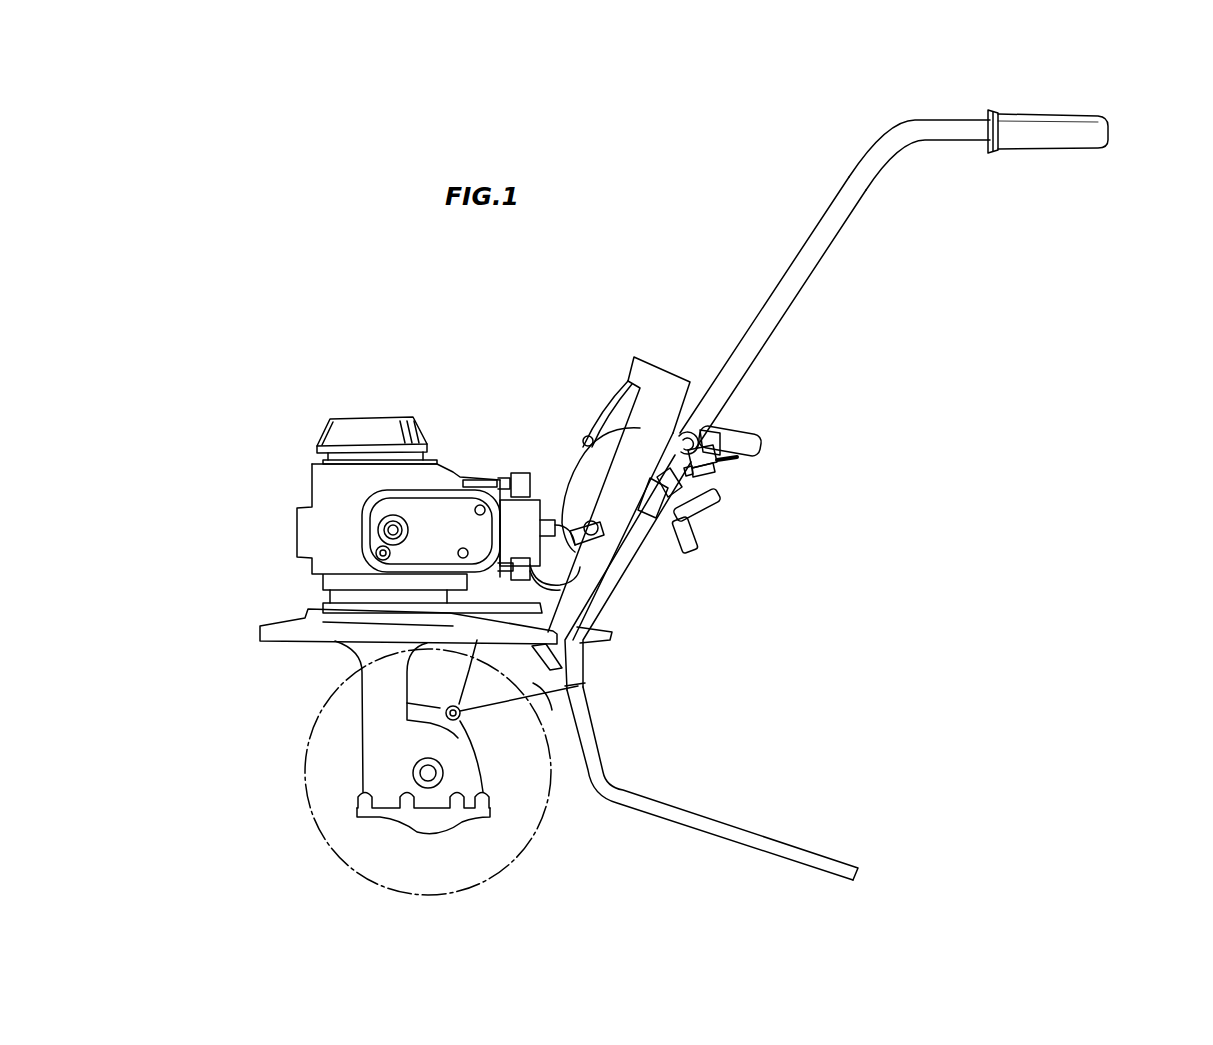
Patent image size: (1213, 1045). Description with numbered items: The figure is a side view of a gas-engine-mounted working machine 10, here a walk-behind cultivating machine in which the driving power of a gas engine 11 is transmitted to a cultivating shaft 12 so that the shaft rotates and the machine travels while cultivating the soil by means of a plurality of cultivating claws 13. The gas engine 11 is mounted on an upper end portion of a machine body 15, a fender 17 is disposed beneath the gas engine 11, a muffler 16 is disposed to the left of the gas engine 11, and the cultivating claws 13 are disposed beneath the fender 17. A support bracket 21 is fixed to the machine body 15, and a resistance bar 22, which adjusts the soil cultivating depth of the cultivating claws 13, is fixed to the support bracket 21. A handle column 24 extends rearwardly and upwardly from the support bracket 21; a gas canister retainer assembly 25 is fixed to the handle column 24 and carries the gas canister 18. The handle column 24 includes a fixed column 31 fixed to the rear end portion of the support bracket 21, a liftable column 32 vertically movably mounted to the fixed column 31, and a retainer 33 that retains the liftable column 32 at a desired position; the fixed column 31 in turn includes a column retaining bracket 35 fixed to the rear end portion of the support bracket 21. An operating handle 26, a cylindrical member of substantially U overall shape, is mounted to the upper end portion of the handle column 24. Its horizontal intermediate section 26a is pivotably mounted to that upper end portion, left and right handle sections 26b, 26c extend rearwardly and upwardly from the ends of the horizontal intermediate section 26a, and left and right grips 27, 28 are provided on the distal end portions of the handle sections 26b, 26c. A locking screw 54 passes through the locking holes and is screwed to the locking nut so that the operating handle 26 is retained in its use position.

The gas-engine-mounted working machine 10 is at (300, 348).
The gas engine 11 is at (391, 485).
The cultivating shaft 12 is at (418, 773).
The cultivating claws 13 is at (377, 717).
The machine body 15 is at (362, 645).
The muffler 16 is at (405, 500).
The fender 17 is at (267, 634).
The gas canister 18 is at (652, 372).
The support bracket 21 is at (537, 686).
The resistance bar 22 is at (762, 843).
The handle column 24 is at (701, 572).
The gas canister retainer assembly 25 is at (575, 462).
The operating handle 26 is at (835, 277).
The horizontal intermediate section 26a is at (700, 440).
The left handle section 26b is at (831, 312).
The right handle section 26c is at (818, 263).
The left grip 27 is at (1082, 110).
The right grip 28 is at (1040, 118).
The fixed column 31 is at (613, 550).
The liftable column 32 is at (692, 475).
The retainer 33 is at (703, 523).
The column retaining bracket 35 is at (613, 623).
The locking screw 54 is at (720, 423).